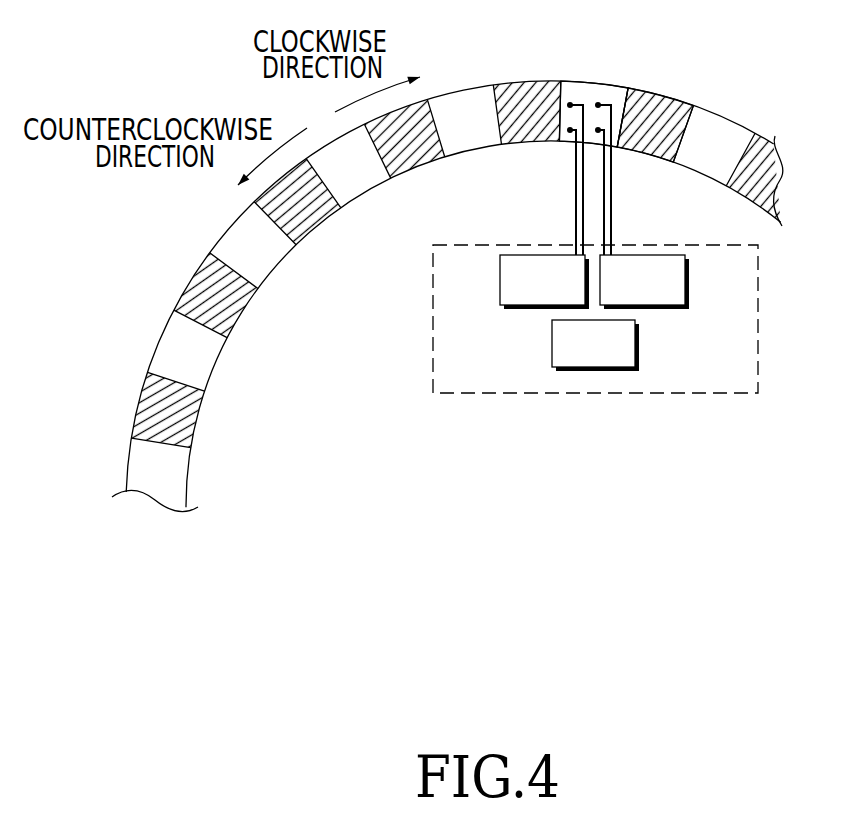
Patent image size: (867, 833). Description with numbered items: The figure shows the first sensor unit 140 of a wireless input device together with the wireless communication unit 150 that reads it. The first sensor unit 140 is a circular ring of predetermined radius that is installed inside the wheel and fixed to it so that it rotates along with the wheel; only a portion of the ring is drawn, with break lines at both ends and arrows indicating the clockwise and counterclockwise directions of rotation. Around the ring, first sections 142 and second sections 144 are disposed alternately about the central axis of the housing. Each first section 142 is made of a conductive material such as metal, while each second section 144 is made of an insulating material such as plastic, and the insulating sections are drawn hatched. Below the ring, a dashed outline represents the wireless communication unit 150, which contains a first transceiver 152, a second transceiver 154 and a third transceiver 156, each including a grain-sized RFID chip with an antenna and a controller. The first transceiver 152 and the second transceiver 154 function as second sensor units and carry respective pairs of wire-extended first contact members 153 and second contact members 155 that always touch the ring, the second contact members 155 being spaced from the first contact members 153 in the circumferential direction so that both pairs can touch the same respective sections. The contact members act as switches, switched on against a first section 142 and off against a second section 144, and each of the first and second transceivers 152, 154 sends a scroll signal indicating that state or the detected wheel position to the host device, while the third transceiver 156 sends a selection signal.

The first sensor unit 140 is at (524, 72).
The first section 142 is at (592, 80).
The second section 144 is at (657, 98).
The wireless communication unit 150 is at (758, 317).
The first transceiver 152 is at (500, 282).
The first contact members 153 is at (563, 130).
The second transceiver 154 is at (689, 283).
The second contact members 155 is at (594, 112).
The third transceiver 156 is at (639, 348).